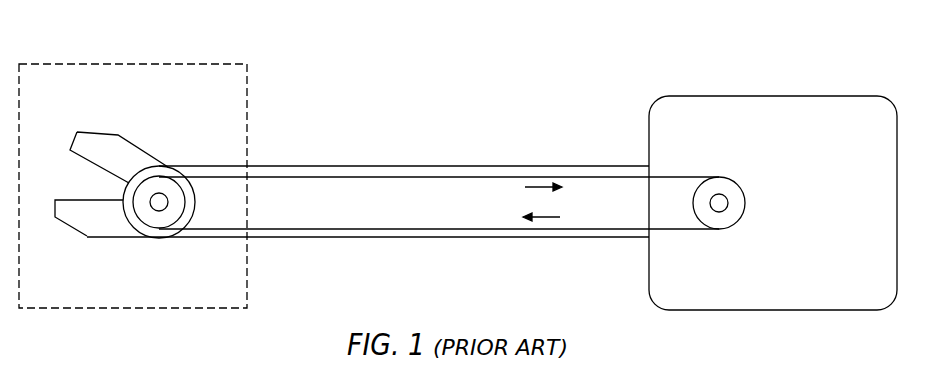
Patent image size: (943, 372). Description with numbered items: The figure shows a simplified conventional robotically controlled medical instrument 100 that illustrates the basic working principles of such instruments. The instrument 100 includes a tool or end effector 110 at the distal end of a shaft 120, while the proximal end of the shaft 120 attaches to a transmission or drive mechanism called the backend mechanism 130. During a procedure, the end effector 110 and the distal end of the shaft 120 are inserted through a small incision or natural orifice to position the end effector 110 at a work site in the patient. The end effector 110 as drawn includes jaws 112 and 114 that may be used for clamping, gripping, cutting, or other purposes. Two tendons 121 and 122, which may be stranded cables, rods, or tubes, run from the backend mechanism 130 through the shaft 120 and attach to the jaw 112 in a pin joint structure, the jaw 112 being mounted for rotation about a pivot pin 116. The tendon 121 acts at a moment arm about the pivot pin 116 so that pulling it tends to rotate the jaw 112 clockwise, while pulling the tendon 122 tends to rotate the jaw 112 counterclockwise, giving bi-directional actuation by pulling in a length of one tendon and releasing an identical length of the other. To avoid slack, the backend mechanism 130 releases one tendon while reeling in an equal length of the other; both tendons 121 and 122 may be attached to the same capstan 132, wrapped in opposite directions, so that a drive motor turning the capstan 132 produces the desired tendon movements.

The instrument 100 is at (513, 39).
The end effector 110 is at (210, 123).
The jaw 112 is at (98, 132).
The jaw 114 is at (115, 238).
The pivot pin 116 is at (168, 204).
The shaft 120 is at (421, 213).
The tendon 121 is at (343, 176).
The tendon 122 is at (343, 230).
The backend mechanism 130 is at (754, 143).
The capstan 132 is at (735, 222).